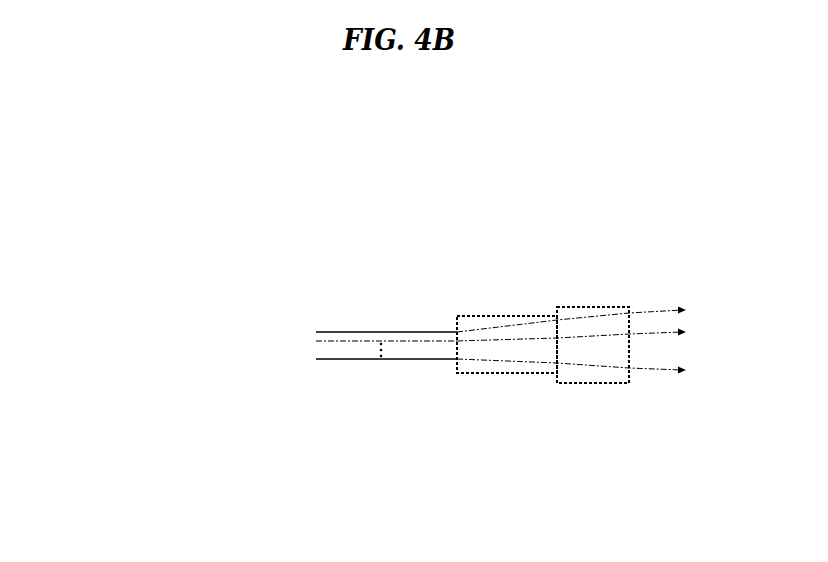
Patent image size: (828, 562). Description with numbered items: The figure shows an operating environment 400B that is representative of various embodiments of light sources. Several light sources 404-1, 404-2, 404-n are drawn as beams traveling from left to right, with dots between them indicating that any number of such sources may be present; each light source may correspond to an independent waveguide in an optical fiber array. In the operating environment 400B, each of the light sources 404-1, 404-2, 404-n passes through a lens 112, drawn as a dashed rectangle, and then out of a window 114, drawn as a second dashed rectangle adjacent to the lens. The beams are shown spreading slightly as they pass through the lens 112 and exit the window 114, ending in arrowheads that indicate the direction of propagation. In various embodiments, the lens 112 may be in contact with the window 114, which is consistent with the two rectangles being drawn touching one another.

The operating environment 400B is at (425, 117).
The light source 404-1 is at (327, 332).
The light source 404-2 is at (318, 341).
The light source 404-n is at (327, 359).
The lens 112 is at (487, 373).
The window 114 is at (600, 307).